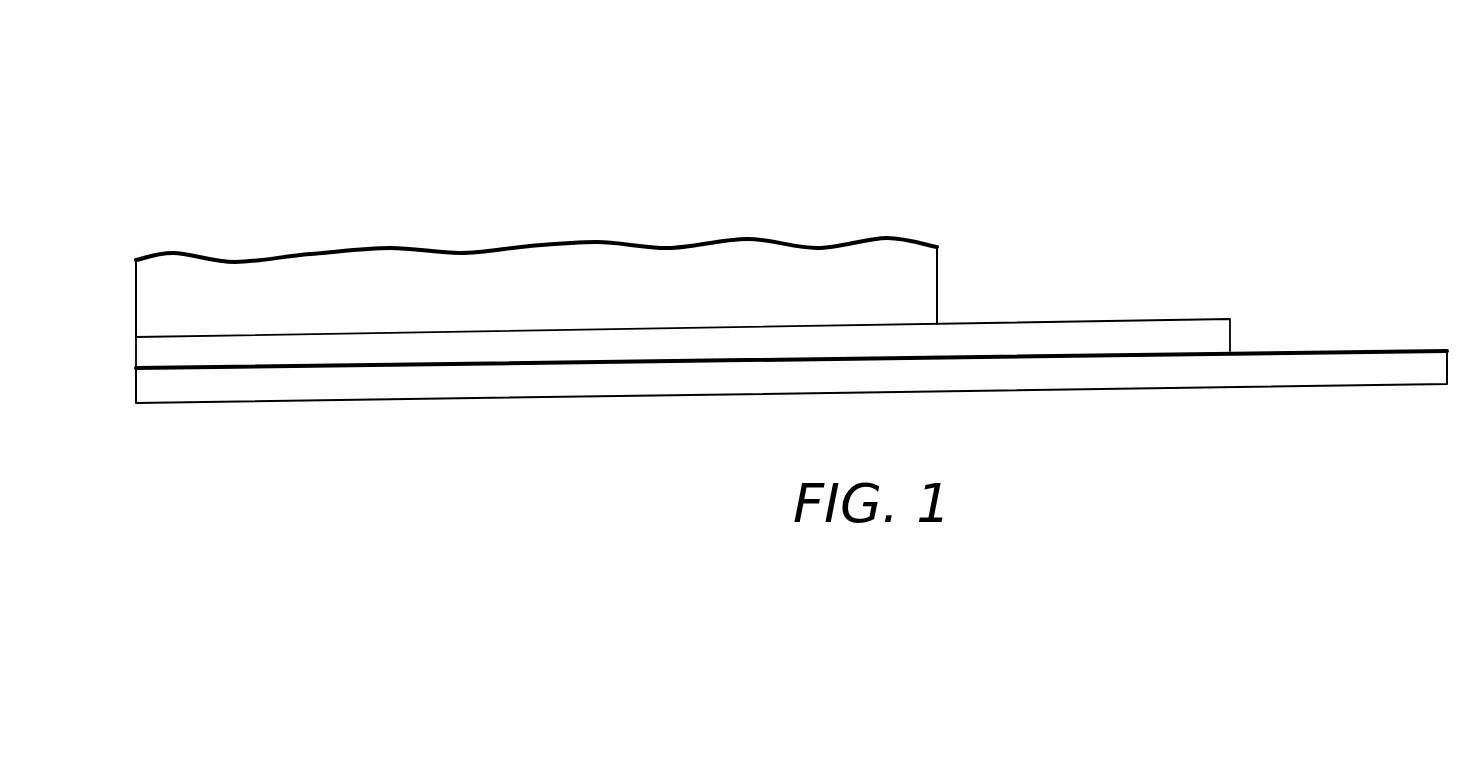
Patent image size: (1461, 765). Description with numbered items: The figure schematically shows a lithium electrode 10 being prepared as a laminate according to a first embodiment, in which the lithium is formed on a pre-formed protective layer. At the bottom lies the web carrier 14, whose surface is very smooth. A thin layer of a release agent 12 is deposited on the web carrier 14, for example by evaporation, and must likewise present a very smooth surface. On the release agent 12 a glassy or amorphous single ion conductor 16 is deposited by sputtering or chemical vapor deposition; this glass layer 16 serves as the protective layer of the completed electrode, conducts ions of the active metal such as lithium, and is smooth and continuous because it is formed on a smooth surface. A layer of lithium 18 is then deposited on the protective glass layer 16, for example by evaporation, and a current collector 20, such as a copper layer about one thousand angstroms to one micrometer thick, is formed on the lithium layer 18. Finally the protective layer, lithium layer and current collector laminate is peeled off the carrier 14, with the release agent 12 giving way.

The lithium electrode 10 is at (791, 248).
The release agent 12 is at (1292, 348).
The web carrier 14 is at (1257, 379).
The glassy or amorphous single ion conductor 16 is at (1117, 330).
The lithium layer 18 is at (574, 253).
The current collector 20 is at (557, 216).